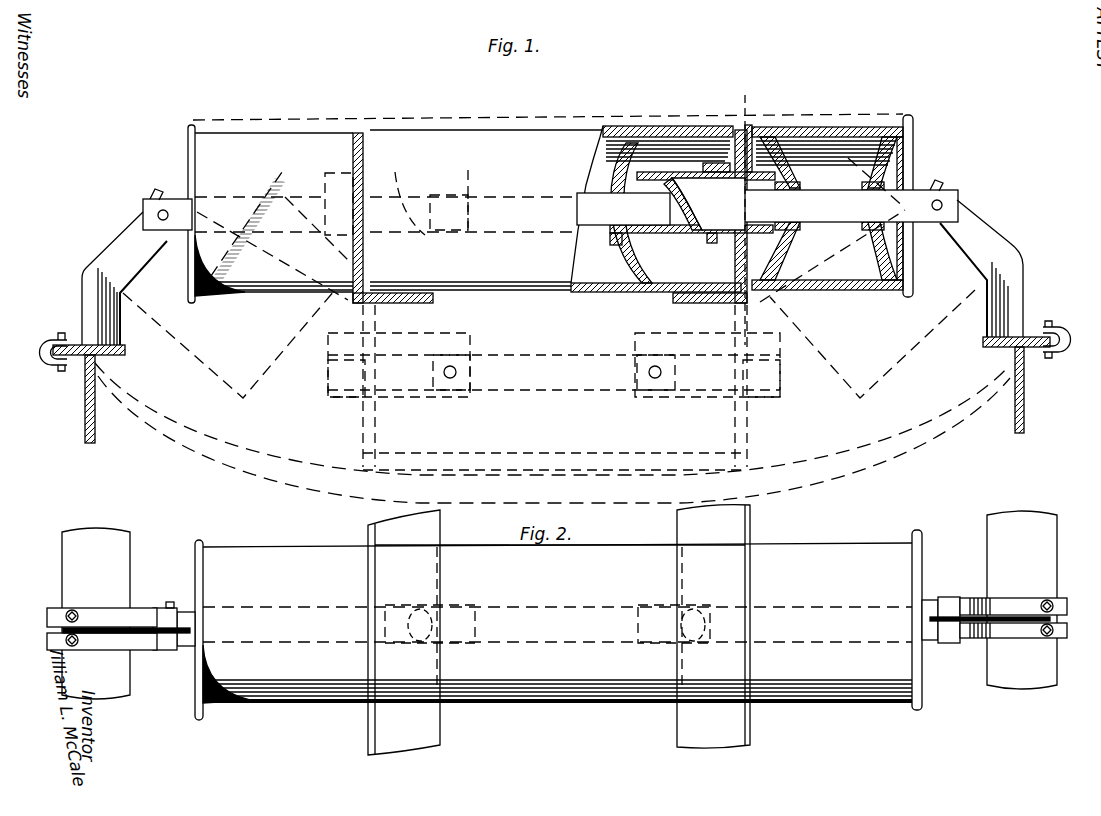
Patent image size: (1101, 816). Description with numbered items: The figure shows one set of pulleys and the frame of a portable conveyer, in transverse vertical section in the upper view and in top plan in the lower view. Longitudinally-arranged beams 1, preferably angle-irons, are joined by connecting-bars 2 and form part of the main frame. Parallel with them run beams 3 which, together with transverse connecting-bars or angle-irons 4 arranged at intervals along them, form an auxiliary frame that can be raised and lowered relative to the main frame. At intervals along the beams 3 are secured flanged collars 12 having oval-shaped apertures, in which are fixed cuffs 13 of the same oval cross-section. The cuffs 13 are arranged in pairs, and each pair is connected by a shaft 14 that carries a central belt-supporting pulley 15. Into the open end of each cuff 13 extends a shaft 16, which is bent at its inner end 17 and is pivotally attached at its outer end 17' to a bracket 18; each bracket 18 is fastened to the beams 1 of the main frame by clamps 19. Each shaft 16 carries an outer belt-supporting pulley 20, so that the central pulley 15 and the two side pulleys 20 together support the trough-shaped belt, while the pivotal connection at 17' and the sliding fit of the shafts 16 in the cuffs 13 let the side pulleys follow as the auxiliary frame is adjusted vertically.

In FIG. 1, the longitudinally-arranged beam 1 is at (85, 412).
In FIG. 2, the longitudinally-arranged beam 1 is at (559, 605).
In FIG. 1, the connecting-bar 2 is at (300, 462).
In FIG. 1, the beam 3 is at (552, 227).
In FIG. 2, the beam 3 is at (559, 630).
In FIG. 1, the transverse connecting-bar 4 is at (554, 273).
In FIG. 1, the flanged collar 12 is at (373, 140).
In FIG. 1, the cuff 13 is at (455, 183).
In FIG. 2, the cuff 13 is at (400, 606).
In FIG. 1, the shaft 14 is at (590, 206).
In FIG. 2, the shaft 14 is at (612, 636).
In FIG. 1, the central belt-supporting pulley 15 is at (555, 211).
In FIG. 2, the central belt-supporting pulley 15 is at (560, 565).
In FIG. 1, the shaft 16 is at (818, 210).
In FIG. 2, the shaft 16 is at (187, 640).
In FIG. 1, the bent inner end 17 is at (535, 195).
In FIG. 2, the bent inner end 17 is at (551, 638).
In FIG. 1, the pivotal attachment 17' is at (549, 193).
In FIG. 2, the pivotal attachment 17' is at (559, 606).
In FIG. 1, the bracket 18 is at (92, 262).
In FIG. 2, the bracket 18 is at (112, 628).
In FIG. 1, the clamp 19 is at (62, 366).
In FIG. 2, the clamp 19 is at (47, 626).
In FIG. 1, the belt-supporting pulley 20 is at (825, 112).
In FIG. 2, the belt-supporting pulley 20 is at (558, 625).